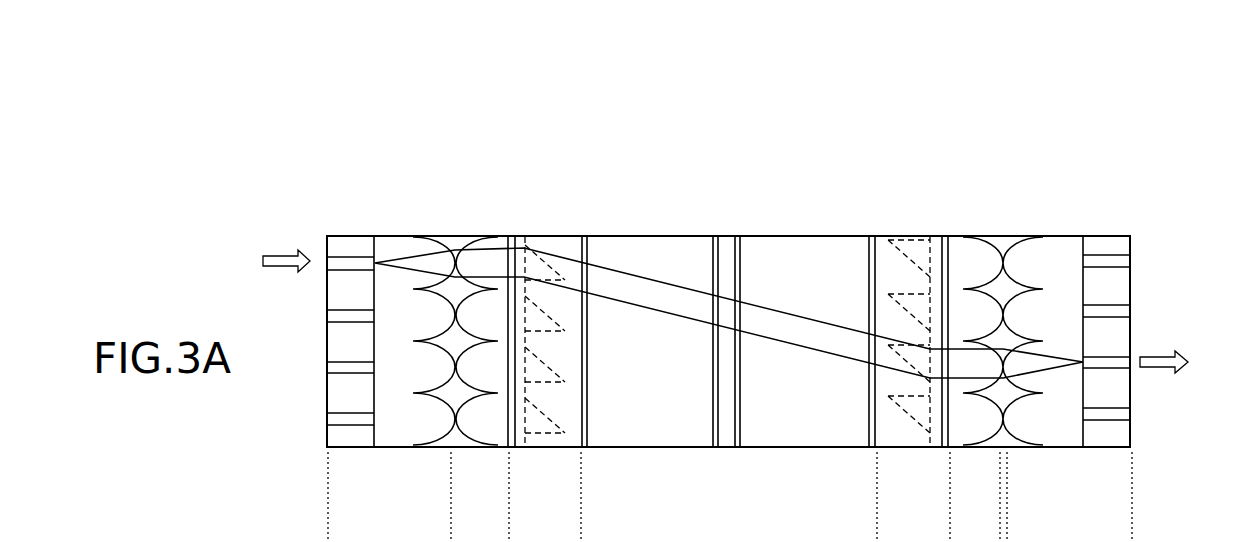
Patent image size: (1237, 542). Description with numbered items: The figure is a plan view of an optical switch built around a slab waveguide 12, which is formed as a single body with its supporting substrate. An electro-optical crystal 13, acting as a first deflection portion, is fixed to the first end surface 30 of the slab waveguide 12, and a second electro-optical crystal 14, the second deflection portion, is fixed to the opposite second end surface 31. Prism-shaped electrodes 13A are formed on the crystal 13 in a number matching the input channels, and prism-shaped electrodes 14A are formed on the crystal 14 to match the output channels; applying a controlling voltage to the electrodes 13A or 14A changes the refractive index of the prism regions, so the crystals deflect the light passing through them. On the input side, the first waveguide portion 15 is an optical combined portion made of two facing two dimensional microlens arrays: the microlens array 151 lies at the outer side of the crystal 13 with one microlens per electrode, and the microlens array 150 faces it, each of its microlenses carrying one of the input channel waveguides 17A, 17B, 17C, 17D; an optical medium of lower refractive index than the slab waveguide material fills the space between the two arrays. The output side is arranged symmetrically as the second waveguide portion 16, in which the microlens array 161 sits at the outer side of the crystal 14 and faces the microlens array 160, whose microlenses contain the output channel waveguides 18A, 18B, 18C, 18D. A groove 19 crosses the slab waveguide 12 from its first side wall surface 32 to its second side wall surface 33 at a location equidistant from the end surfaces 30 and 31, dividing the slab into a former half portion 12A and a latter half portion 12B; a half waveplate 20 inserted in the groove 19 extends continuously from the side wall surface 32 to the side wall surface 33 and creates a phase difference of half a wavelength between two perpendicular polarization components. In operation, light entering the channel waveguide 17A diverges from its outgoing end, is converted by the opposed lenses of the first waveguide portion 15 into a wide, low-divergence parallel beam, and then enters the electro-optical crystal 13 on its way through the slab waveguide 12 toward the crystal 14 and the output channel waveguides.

The slab waveguide 12 is at (585, 222).
The former half portion 12A is at (713, 110).
The latter half portion 12B is at (865, 110).
The electro-optical crystal 13 is at (515, 222).
The electrodes 13A is at (566, 282).
The electro-optical crystal 14 is at (875, 222).
The electrodes 14A is at (897, 300).
The optical combined portion 15 is at (373, 222).
The optical combined portion 16 is at (948, 222).
The input channel waveguide 17A is at (352, 257).
The input channel waveguide 17B is at (327, 316).
The input channel waveguide 17C is at (327, 367).
The input channel waveguide 17D is at (327, 418).
The output channel waveguide 18A is at (1133, 262).
The output channel waveguide 18B is at (1133, 309).
The output channel waveguide 18C is at (1133, 356).
The output channel waveguide 18D is at (1133, 412).
The groove 19 is at (740, 267).
The half waveplate 20 is at (743, 447).
The first end surface 30 is at (588, 343).
The second end surface 31 is at (869, 282).
The first side wall surface 32 is at (803, 237).
The second side wall surface 33 is at (790, 447).
The two dimensional microlens array 150 is at (400, 455).
The two dimensional microlens array 151 is at (485, 455).
The two dimensional microlens array 160 is at (1070, 455).
The two dimensional microlens array 161 is at (985, 455).